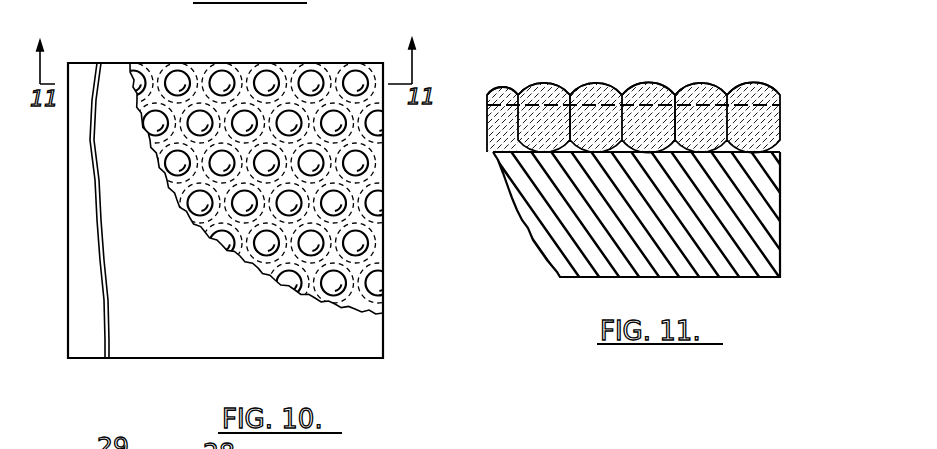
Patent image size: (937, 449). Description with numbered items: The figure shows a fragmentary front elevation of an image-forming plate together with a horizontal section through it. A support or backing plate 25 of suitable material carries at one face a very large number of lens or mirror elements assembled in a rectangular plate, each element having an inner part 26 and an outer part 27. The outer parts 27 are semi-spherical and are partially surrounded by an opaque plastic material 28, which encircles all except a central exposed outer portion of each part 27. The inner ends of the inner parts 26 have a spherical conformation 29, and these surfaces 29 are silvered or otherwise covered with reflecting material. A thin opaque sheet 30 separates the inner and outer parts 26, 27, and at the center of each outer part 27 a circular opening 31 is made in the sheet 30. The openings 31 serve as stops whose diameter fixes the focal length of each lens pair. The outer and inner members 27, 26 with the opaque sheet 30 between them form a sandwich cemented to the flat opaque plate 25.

In FIG. 10, the support or backing plate 25 is at (355, 342).
In FIG. 11, the support or backing plate 25 is at (736, 265).
In FIG. 11, the inner part 26 is at (545, 130).
In FIG. 10, the outer part 27 is at (220, 79).
In FIG. 11, the outer part 27 is at (542, 83).
In FIG. 10, the opaque plastic material 28 is at (245, 100).
In FIG. 11, the opaque plastic material 28 is at (571, 96).
In FIG. 11, the spherical surface 29 is at (707, 158).
In FIG. 11, the thin opaque sheet 30 is at (497, 101).
In FIG. 11, the circular opening 31 is at (520, 106).